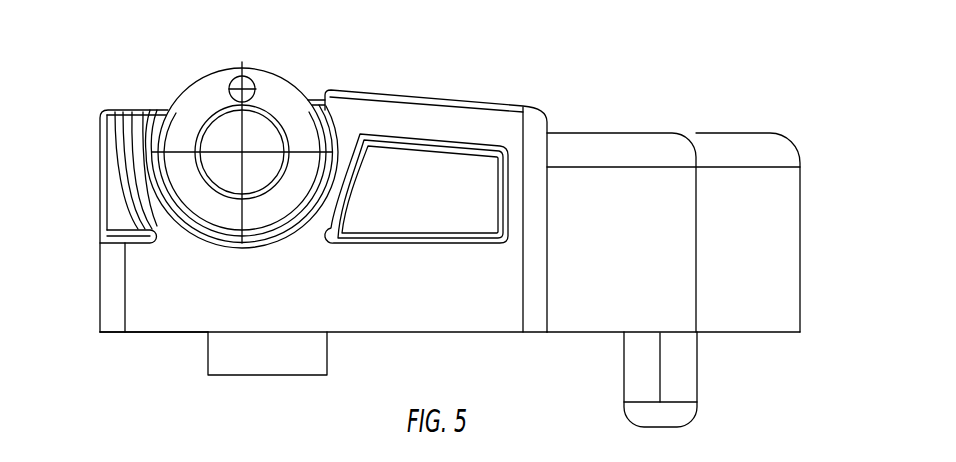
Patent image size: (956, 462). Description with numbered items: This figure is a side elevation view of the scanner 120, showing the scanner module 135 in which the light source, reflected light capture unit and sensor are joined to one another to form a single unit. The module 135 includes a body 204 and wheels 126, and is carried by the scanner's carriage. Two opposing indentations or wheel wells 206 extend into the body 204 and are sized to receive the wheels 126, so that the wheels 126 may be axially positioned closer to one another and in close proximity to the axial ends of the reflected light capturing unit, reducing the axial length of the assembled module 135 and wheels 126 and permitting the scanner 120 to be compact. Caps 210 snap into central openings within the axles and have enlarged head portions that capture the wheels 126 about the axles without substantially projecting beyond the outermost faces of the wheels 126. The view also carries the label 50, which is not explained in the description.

The shaft axis 50 is at (242, 152).
The scanner 120 is at (413, 69).
The wheels 126 is at (215, 73).
The scanner module 135 is at (104, 305).
The body 204 is at (155, 334).
The wheel wells 206 is at (153, 142).
The caps 210 is at (222, 135).